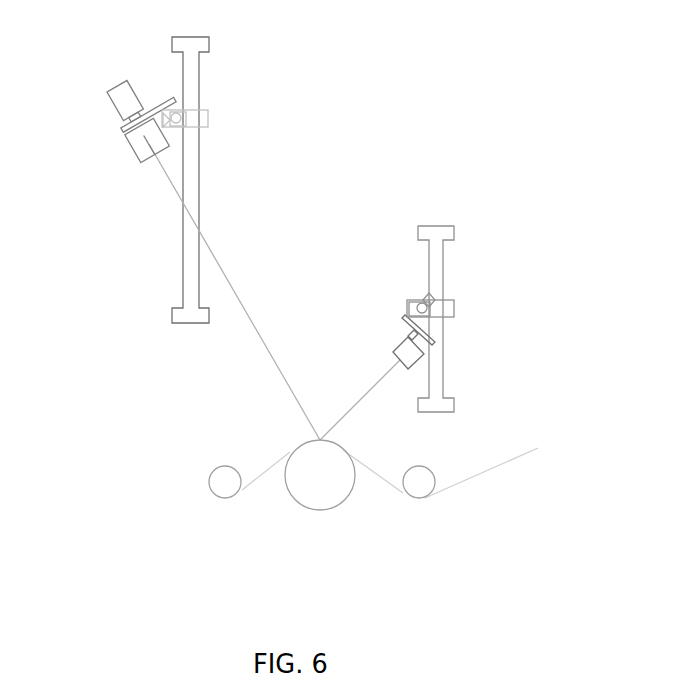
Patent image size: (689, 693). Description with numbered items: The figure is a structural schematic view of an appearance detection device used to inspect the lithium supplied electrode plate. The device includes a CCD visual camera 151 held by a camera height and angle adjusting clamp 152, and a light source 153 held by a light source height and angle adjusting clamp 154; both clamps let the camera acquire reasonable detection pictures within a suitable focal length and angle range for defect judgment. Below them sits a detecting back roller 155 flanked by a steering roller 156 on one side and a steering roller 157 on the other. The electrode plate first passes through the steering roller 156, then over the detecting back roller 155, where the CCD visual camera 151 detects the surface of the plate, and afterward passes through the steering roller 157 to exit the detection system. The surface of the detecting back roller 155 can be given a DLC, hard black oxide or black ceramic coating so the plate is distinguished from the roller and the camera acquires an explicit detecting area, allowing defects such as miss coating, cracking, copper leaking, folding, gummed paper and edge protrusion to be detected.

The CCD visual camera 151 is at (160, 92).
The camera height and angle adjusting clamp 152 is at (193, 122).
The light source 153 is at (394, 351).
The light source height and angle adjusting clamp 154 is at (429, 299).
The detecting back roller 155 is at (325, 467).
The steering roller 156 is at (225, 480).
The steering roller 157 is at (419, 482).